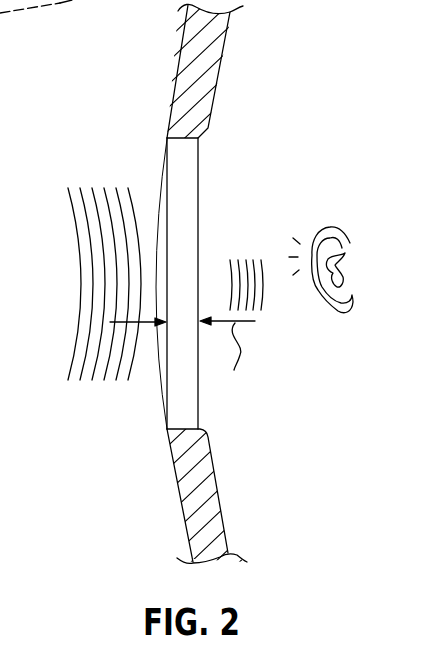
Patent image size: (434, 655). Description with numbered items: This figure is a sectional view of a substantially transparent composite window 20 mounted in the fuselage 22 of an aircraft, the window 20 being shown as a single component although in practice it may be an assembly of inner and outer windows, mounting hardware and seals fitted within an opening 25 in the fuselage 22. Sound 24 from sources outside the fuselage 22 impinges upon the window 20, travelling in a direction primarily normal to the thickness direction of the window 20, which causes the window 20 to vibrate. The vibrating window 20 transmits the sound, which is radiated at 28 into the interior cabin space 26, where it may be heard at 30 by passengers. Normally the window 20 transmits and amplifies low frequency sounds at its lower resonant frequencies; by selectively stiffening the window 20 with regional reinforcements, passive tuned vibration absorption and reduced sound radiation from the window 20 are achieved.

The composite window 20 is at (182, 170).
The fuselage 22 is at (198, 62).
The sound 24 is at (114, 277).
The opening 25 is at (180, 134).
The interior cabin space 26 is at (310, 115).
The radiated sound 28 is at (250, 297).
The hearing location 30 is at (328, 224).